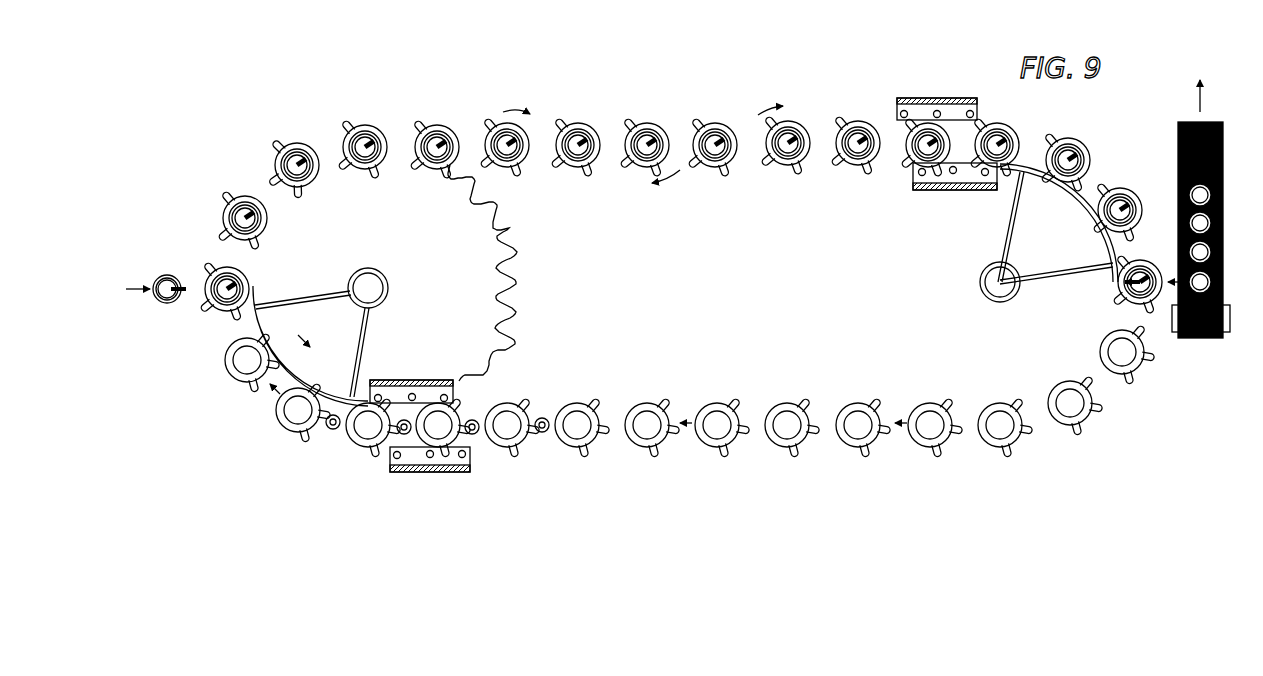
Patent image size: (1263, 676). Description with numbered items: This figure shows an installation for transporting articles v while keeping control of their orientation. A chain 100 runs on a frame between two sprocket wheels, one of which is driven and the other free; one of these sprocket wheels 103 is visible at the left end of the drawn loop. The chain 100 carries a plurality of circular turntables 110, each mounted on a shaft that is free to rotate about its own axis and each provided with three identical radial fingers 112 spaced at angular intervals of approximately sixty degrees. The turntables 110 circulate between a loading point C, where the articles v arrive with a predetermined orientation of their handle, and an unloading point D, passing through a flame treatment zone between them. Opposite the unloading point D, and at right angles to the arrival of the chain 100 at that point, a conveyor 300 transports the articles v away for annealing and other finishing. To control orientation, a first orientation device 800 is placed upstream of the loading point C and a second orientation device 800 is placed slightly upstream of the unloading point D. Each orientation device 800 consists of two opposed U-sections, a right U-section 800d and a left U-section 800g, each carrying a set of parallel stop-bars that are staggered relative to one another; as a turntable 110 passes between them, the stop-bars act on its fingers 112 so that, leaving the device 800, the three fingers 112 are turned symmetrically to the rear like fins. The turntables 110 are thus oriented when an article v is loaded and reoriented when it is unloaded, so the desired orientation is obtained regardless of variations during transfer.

The chain 100 is at (607, 147).
The turntable 110 is at (297, 143).
The radial finger 112 is at (284, 147).
The sprocket wheel 103 is at (480, 255).
The orientation device 800 is at (342, 452).
The right U-section 800d is at (412, 390).
The left U-section 800g is at (462, 454).
The conveyor 300 is at (1178, 148).
The article v is at (168, 282).
The loading point C is at (191, 320).
The unloading point D is at (1162, 306).